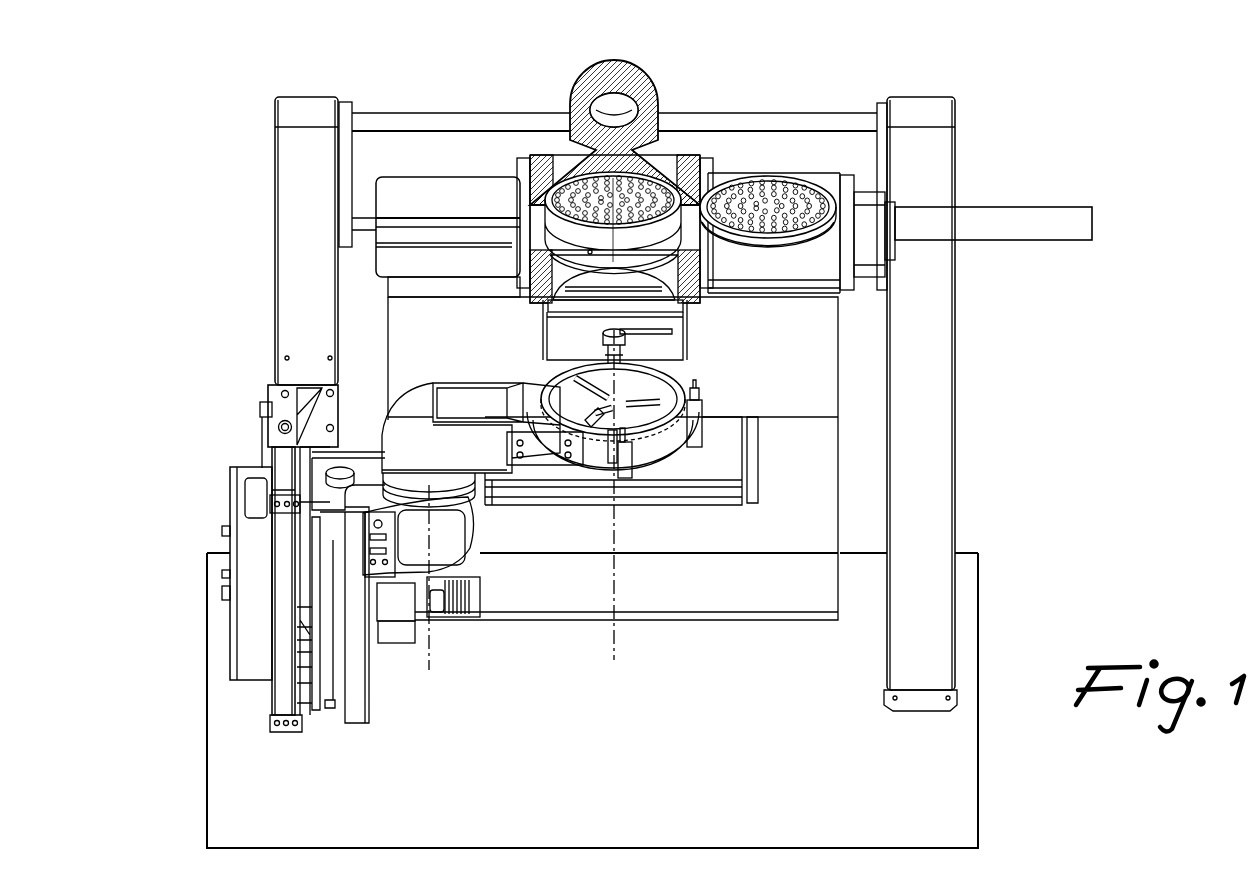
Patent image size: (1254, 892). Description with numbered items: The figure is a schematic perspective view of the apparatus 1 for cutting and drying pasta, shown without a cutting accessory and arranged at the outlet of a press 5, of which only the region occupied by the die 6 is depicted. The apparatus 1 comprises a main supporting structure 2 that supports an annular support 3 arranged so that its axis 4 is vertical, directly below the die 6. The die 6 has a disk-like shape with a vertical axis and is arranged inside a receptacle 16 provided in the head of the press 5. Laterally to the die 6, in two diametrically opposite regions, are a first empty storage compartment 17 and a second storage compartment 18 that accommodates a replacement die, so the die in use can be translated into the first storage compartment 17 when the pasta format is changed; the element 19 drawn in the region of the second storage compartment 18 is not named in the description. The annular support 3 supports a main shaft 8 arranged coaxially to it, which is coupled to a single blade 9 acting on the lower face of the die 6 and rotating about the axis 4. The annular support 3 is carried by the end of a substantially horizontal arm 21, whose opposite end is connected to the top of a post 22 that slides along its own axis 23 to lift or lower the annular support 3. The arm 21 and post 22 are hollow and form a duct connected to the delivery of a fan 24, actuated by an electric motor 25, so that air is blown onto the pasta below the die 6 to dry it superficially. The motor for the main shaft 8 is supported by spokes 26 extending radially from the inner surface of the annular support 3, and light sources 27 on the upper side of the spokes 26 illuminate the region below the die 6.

The apparatus 1 is at (720, 343).
The main supporting structure 2 is at (265, 388).
The annular support 3 is at (648, 443).
The axis 4 is at (614, 645).
The press 5 is at (667, 148).
The die 6 is at (580, 203).
The main shaft 8 is at (607, 378).
The blade 9 is at (650, 330).
The receptacle 16 is at (537, 223).
The first storage compartment 17 is at (436, 213).
The second storage compartment 18 is at (830, 185).
The second perforated disc 19 is at (770, 185).
The arm 21 is at (462, 455).
The post 22 is at (447, 487).
The axis 23 is at (429, 666).
The fan 24 is at (397, 632).
The electric motor 25 is at (470, 597).
The spokes 26 is at (556, 398).
The light sources 27 is at (637, 397).